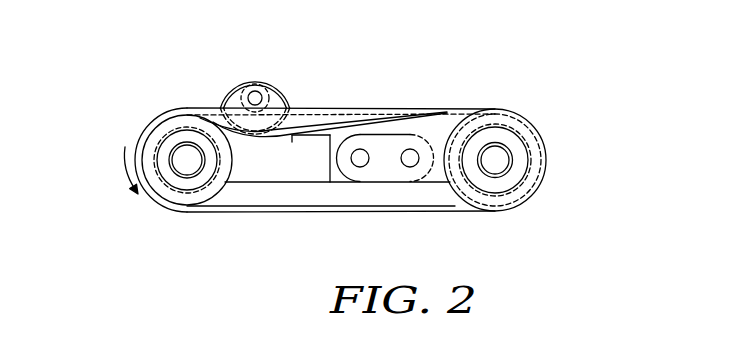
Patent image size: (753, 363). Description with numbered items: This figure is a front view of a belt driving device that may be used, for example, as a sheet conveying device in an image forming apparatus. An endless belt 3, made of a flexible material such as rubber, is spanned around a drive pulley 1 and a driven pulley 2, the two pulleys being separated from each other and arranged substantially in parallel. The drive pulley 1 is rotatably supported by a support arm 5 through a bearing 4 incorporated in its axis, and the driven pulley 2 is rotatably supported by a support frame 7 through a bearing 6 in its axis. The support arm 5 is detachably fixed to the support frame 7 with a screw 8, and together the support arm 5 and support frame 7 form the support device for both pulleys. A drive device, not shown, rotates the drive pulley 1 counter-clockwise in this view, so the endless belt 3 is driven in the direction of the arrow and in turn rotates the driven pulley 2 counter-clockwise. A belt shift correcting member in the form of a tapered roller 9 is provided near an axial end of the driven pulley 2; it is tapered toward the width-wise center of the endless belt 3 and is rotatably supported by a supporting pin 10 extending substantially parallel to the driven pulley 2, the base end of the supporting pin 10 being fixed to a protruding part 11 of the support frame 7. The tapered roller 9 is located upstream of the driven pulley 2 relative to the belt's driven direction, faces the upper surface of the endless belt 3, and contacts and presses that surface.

The drive pulley 1 is at (547, 153).
The driven pulley 2 is at (173, 207).
The endless belt 3 is at (273, 212).
The bearing 4 is at (516, 203).
The support arm 5 is at (437, 184).
The bearing 6 is at (197, 177).
The support frame 7 is at (310, 178).
The screw 8 is at (409, 148).
The tapered roller 9 is at (292, 86).
The supporting pin 10 is at (257, 90).
The protruding part 11 is at (222, 86).